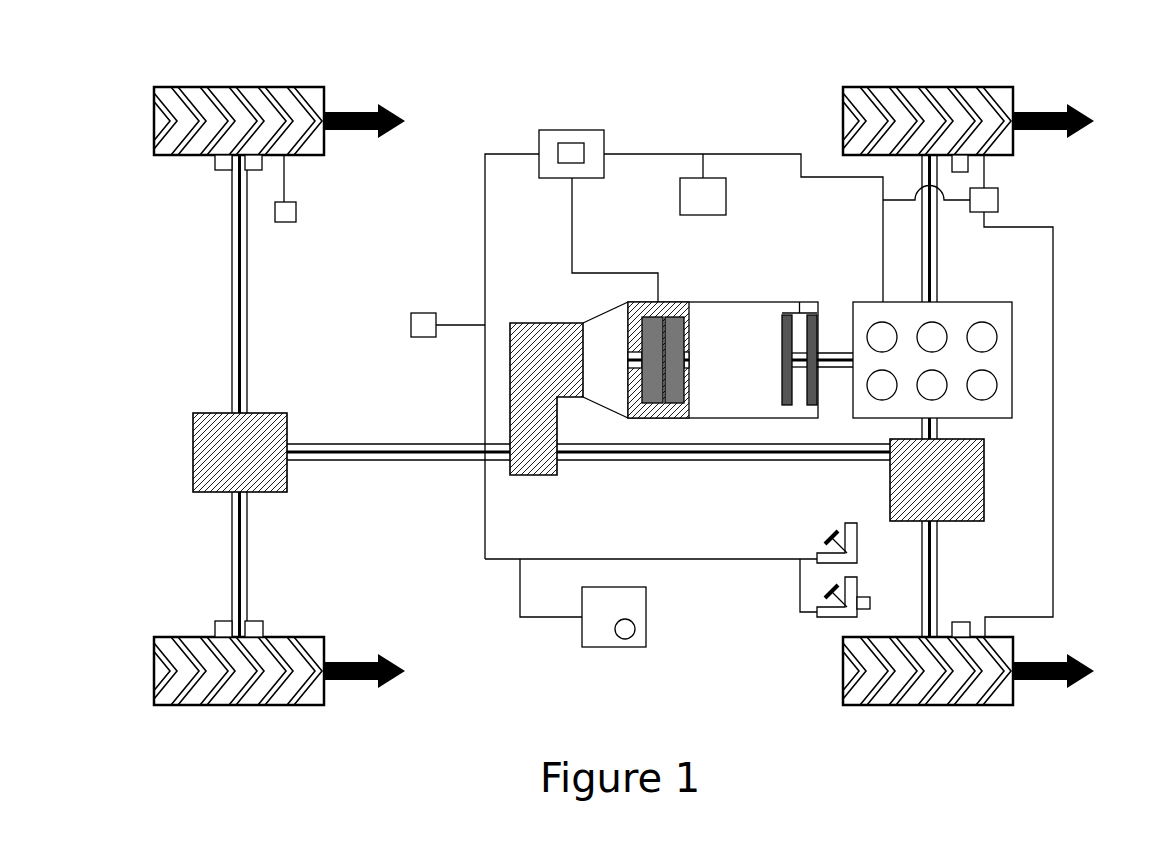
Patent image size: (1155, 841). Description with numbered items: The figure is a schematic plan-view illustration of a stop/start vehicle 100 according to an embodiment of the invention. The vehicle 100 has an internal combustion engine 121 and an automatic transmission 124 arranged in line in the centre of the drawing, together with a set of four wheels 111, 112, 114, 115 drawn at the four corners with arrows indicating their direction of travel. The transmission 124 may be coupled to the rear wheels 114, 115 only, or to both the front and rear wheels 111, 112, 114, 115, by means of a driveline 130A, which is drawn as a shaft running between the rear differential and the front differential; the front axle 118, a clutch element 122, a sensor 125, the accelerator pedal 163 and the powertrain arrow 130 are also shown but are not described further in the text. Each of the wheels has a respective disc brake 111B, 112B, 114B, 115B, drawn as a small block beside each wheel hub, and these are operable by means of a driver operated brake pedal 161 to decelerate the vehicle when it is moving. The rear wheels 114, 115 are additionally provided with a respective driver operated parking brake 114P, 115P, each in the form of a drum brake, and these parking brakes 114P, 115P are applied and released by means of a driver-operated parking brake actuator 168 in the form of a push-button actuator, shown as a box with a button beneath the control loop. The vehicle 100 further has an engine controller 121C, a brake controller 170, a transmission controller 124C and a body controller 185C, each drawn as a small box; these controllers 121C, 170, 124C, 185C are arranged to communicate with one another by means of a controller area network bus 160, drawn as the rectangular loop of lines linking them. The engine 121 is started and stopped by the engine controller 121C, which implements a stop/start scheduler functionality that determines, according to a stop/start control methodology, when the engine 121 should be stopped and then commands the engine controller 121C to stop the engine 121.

The stop/start vehicle 100 is at (152, 48).
The front wheel 111 is at (997, 95).
The disc brake 111B is at (960, 158).
The front wheel 112 is at (1005, 707).
The disc brake 112B is at (960, 633).
The rear wheel 114 is at (297, 97).
The disc brake 114B is at (253, 160).
The parking brake 114P is at (223, 163).
The rear wheel 115 is at (188, 695).
The disc brake 115B is at (255, 630).
The parking brake 115P is at (223, 628).
The front axle 118 is at (935, 265).
The internal combustion engine 121 is at (1002, 357).
The engine controller 121C is at (557, 130).
The clutch 122 is at (803, 300).
The automatic transmission 124 is at (663, 412).
The transmission controller 124C is at (410, 332).
The sensor 125 is at (287, 182).
The powertrain 130 is at (459, 651).
The driveline 130A is at (375, 506).
The controller area network (CAN) bus 160 is at (667, 154).
The brake pedal 161 is at (825, 536).
The accelerator pedal 163 is at (825, 588).
The parking brake actuator 168 is at (627, 635).
The brake controller 170 is at (990, 198).
The body controller 185C is at (705, 208).